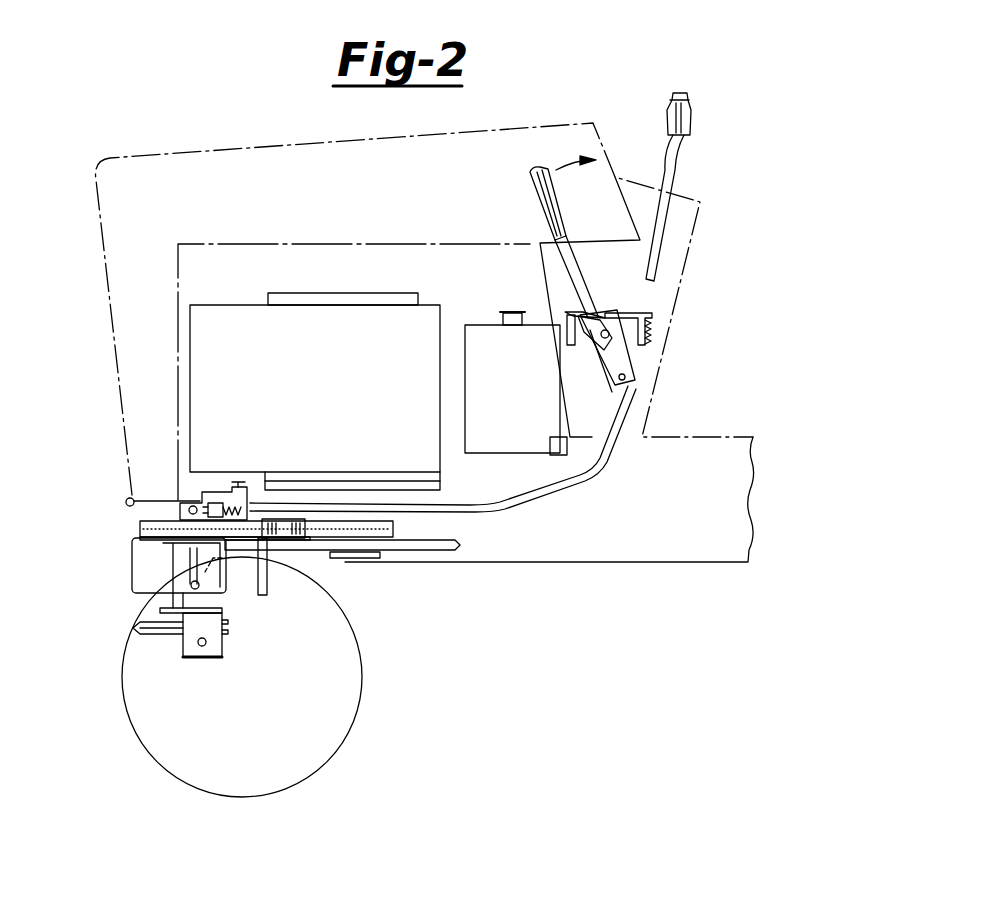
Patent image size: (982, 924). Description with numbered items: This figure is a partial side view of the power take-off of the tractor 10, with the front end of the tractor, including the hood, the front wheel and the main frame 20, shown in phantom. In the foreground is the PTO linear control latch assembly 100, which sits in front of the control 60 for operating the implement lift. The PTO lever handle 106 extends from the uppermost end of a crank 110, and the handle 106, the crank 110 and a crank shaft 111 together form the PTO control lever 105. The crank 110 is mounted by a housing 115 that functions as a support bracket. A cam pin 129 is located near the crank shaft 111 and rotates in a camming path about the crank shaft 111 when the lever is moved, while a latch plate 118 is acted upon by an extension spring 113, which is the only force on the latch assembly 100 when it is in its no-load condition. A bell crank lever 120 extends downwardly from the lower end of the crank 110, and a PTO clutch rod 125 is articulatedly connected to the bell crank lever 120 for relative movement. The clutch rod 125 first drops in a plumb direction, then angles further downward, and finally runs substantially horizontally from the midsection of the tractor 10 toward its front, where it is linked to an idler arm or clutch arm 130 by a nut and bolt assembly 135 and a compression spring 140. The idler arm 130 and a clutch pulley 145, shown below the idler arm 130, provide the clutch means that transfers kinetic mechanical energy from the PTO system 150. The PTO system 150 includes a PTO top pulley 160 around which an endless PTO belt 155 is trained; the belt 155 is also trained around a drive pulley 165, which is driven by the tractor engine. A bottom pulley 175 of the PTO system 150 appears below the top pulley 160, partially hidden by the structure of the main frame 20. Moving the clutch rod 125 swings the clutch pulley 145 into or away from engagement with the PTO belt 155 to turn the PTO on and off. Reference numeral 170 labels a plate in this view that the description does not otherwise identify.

The tractor vehicle 10 is at (742, 146).
The main frame 20 is at (210, 650).
The control for operating an implement lift 60 is at (692, 100).
The PTO linear control latch assembly 100 is at (712, 333).
The PTO control lever 105 is at (354, 342).
The PTO lever handle 106 is at (553, 204).
The crank 110 is at (583, 237).
The crank shaft 111 is at (608, 372).
The extension spring 113 is at (652, 336).
The housing 115 is at (567, 333).
The latch plate 118 is at (645, 312).
The bell crank lever 120 is at (623, 360).
The PTO clutch rod 125 is at (543, 482).
The cam pin 129 is at (590, 318).
The idler arm 130 is at (334, 534).
The nut and bolt assembly 135 is at (220, 498).
The compression spring 140 is at (237, 505).
The clutch pulley 145 is at (283, 557).
The PTO system 150 is at (125, 562).
The PTO belt 155 is at (178, 518).
The PTO top pulley 160 is at (130, 498).
The drive pulley 165 is at (383, 518).
The plate 170 is at (443, 549).
The bottom pulley 175 is at (140, 629).